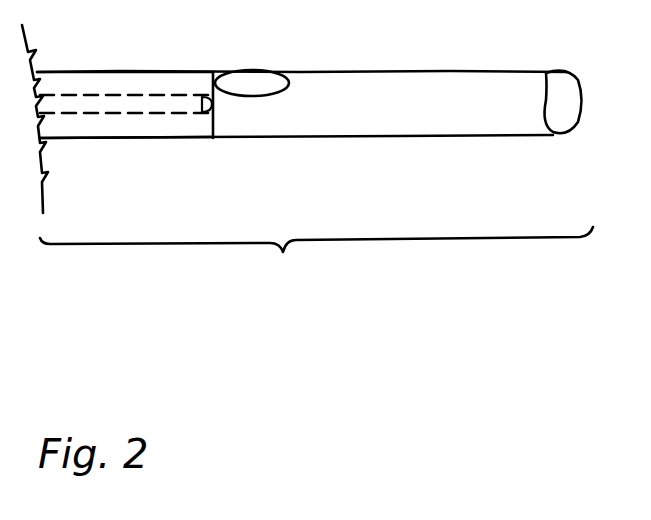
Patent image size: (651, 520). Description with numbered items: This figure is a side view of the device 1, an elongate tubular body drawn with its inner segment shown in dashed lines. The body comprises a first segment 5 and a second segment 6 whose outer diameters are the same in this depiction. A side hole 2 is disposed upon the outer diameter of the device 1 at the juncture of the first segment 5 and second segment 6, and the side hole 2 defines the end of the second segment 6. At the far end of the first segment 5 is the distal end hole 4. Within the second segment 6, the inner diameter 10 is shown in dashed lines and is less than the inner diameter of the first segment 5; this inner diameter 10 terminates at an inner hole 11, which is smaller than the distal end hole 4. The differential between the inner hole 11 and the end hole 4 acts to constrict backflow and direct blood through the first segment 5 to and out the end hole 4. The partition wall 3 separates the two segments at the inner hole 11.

The device 1 is at (316, 265).
The side hole 2 is at (255, 78).
The partition wall 3 is at (212, 123).
The distal end hole 4 is at (562, 85).
The first segment 5 is at (393, 72).
The second segment 6 is at (98, 72).
The inner diameter 10 is at (113, 102).
The inner hole 11 is at (213, 103).